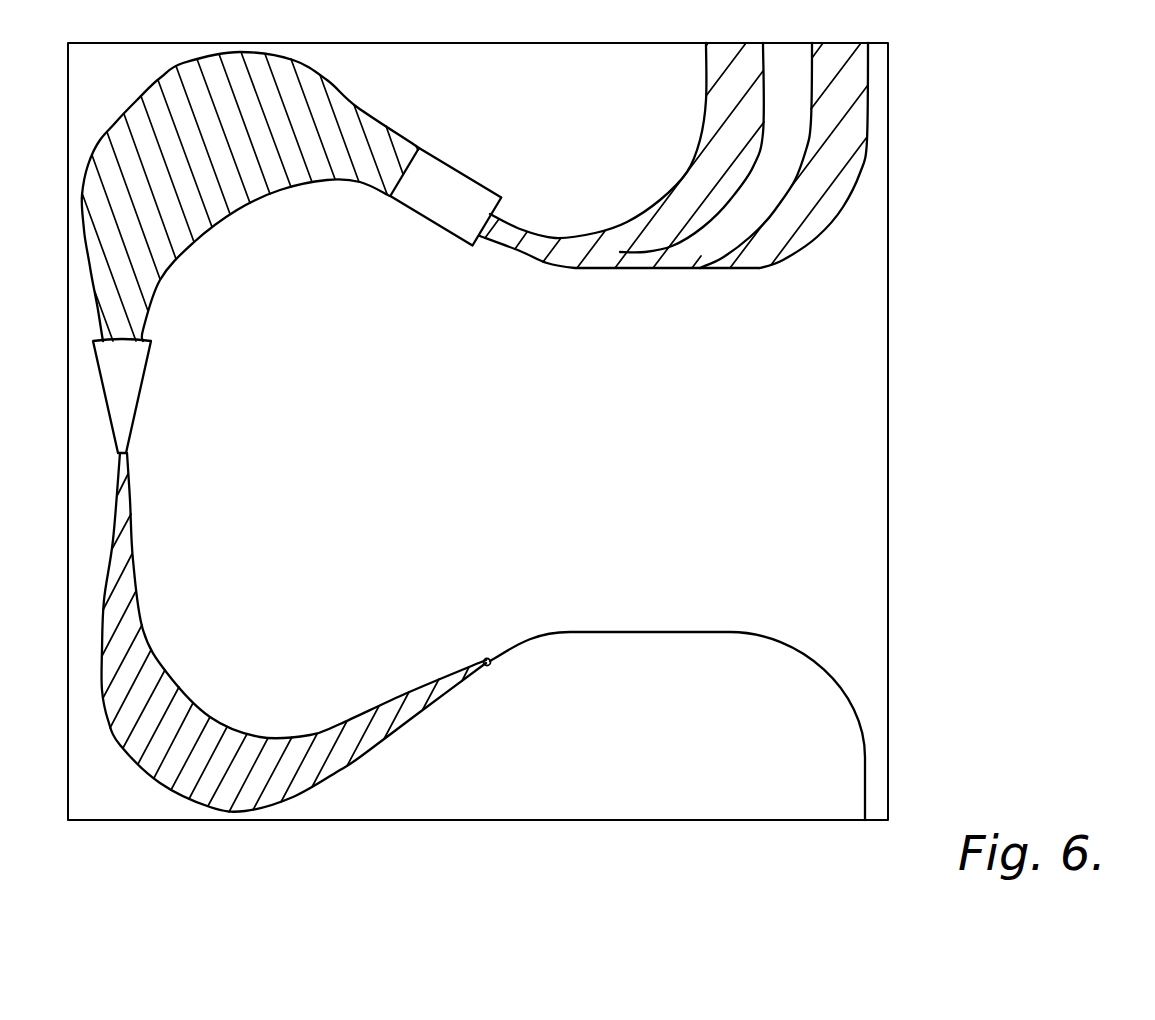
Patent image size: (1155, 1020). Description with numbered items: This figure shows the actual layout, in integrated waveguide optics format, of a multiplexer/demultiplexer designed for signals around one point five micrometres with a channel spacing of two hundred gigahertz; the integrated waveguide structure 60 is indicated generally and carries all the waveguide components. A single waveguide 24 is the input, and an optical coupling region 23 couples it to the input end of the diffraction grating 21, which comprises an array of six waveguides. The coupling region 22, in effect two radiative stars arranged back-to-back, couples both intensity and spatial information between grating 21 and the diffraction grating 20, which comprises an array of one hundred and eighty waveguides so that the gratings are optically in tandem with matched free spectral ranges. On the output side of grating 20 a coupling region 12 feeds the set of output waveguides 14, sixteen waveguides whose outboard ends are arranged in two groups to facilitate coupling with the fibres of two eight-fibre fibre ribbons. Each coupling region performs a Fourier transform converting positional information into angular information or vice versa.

The integrated waveguide structure 60 is at (890, 415).
The optical waveguide diffraction grating 20 is at (160, 210).
The set of output waveguides 14 is at (823, 152).
The coupling region 12 is at (443, 197).
The coupling region 22 is at (123, 377).
The optical waveguide diffraction grating 21 is at (152, 717).
The optical coupling region 23 is at (489, 657).
The single waveguide 24 is at (652, 632).